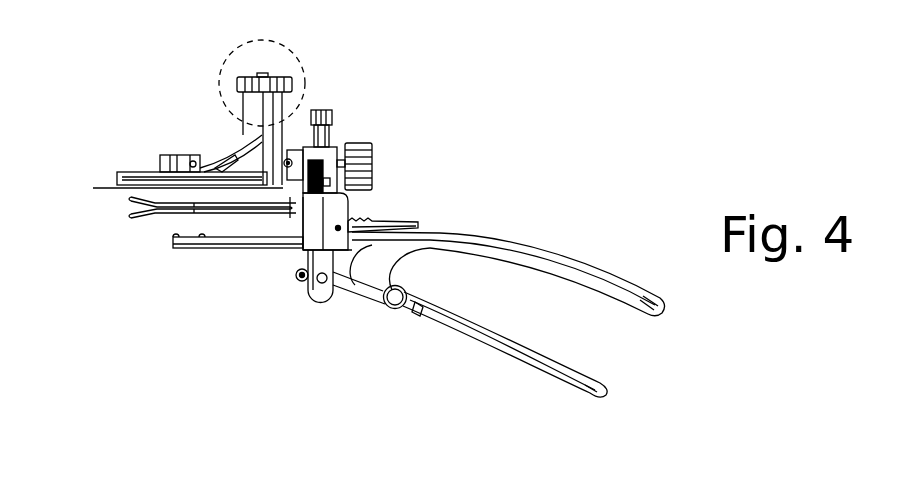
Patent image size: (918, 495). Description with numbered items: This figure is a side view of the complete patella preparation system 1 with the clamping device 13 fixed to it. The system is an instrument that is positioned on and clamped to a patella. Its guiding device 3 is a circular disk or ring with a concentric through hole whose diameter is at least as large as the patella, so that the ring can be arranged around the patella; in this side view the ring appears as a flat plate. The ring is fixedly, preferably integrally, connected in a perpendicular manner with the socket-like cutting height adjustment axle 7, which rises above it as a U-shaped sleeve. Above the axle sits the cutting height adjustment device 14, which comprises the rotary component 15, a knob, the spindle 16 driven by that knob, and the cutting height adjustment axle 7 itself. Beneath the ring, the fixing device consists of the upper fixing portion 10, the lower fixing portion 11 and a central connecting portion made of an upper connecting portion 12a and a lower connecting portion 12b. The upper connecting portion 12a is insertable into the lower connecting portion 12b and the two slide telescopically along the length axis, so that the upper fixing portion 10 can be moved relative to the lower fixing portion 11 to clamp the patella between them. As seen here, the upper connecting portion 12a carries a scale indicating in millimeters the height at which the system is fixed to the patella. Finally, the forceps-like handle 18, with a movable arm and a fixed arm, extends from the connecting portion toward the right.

The patella preparation system 1 is at (482, 125).
The guiding device 3 is at (112, 177).
The cutting height adjustment axle 7 is at (270, 104).
The upper fixing portion 10 is at (193, 150).
The lower fixing portion 11 is at (178, 252).
The upper connecting portion 12a is at (331, 157).
The lower connecting portion 12b is at (351, 200).
The clamping device 13 is at (143, 222).
The cutting height adjustment device 14 is at (308, 63).
The rotary component 15 is at (237, 76).
The spindle 16 is at (270, 68).
The handle 18 is at (487, 368).